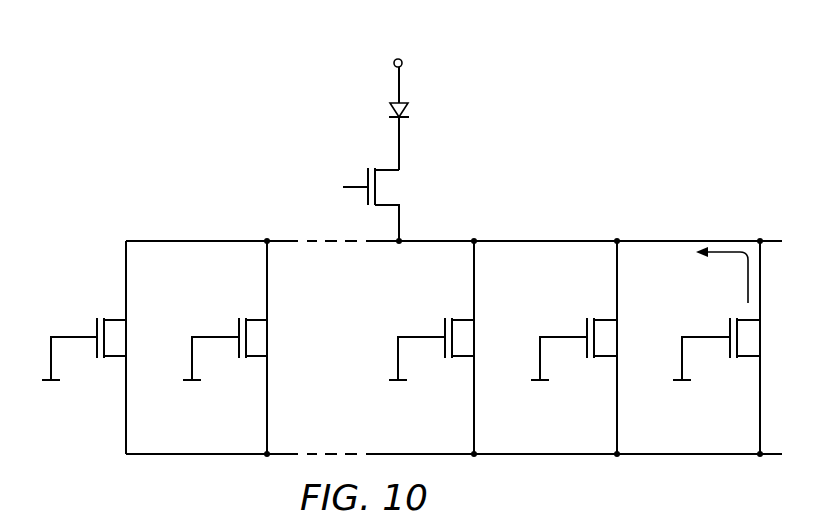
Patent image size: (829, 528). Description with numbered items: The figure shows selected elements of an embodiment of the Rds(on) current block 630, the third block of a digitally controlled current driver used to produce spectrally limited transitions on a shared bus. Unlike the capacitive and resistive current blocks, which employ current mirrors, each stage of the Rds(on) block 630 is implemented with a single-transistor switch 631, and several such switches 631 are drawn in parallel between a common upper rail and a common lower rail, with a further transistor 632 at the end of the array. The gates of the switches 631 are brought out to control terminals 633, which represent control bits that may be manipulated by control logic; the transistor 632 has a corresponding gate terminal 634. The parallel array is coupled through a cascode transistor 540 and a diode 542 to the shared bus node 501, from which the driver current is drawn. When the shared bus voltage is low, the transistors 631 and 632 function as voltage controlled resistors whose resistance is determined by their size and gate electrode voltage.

The Rds(on) current block 630 is at (149, 66).
The shared bus node 501 is at (407, 63).
The diode D1 542 is at (408, 112).
The cascode transistor 540 is at (368, 170).
The single-transistor switch 631 is at (97, 322).
The control terminals 633 is at (42, 382).
The transistor 632 is at (730, 322).
The gate terminal of end transistor 634 is at (690, 382).